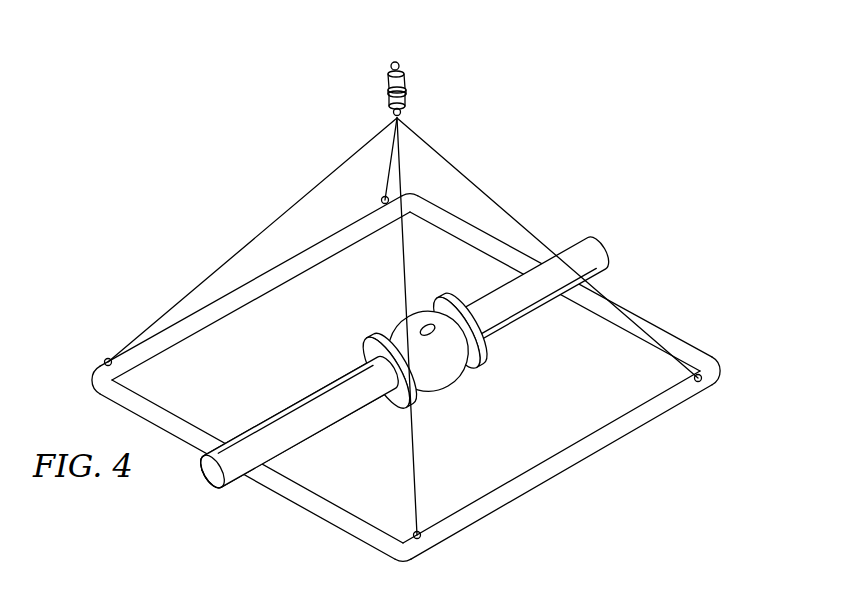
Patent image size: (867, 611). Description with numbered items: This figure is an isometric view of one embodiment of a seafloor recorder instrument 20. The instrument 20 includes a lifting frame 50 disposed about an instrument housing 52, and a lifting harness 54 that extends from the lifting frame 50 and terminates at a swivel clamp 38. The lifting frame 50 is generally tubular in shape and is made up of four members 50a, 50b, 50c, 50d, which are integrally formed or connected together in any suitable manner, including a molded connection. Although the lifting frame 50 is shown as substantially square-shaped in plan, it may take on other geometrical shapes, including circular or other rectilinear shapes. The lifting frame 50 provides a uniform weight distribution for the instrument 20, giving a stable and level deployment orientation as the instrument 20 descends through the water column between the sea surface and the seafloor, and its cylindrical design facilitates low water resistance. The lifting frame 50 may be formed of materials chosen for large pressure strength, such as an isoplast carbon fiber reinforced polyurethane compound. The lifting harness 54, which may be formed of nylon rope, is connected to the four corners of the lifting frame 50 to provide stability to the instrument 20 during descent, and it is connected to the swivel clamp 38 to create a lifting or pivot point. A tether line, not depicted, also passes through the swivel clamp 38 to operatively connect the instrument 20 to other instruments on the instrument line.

The instrument 20 is at (222, 184).
The swivel clamp 38 is at (406, 78).
The lifting frame 50 is at (538, 496).
The member 50a is at (636, 429).
The member 50b is at (318, 516).
The member 50c is at (262, 296).
The member 50d is at (690, 345).
The instrument housing 52 is at (522, 325).
The lifting harness 54 is at (463, 175).